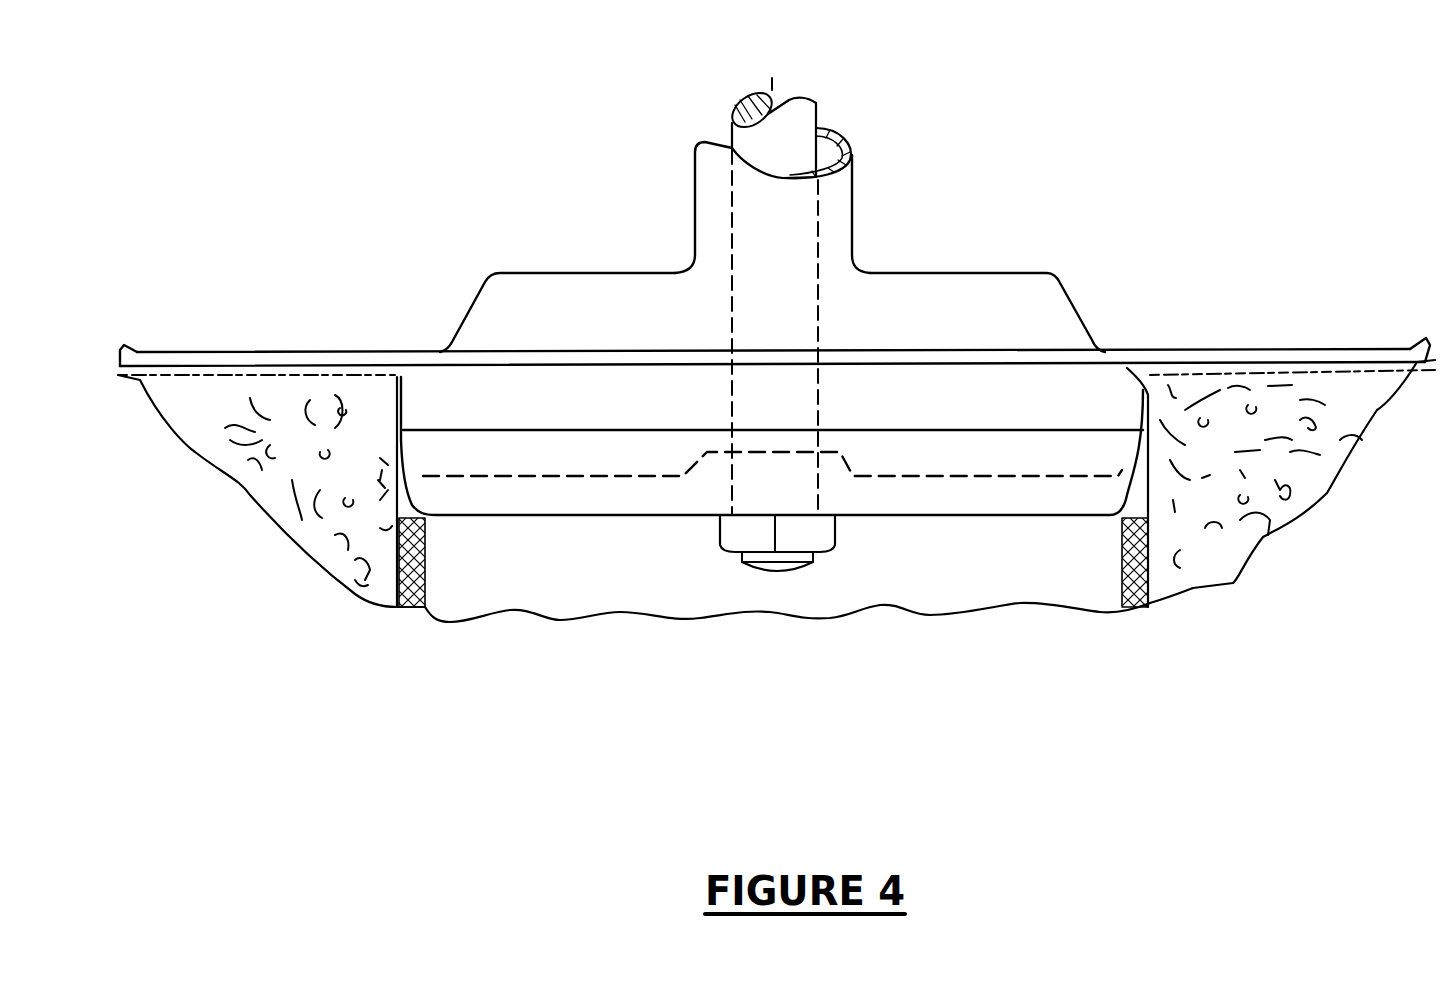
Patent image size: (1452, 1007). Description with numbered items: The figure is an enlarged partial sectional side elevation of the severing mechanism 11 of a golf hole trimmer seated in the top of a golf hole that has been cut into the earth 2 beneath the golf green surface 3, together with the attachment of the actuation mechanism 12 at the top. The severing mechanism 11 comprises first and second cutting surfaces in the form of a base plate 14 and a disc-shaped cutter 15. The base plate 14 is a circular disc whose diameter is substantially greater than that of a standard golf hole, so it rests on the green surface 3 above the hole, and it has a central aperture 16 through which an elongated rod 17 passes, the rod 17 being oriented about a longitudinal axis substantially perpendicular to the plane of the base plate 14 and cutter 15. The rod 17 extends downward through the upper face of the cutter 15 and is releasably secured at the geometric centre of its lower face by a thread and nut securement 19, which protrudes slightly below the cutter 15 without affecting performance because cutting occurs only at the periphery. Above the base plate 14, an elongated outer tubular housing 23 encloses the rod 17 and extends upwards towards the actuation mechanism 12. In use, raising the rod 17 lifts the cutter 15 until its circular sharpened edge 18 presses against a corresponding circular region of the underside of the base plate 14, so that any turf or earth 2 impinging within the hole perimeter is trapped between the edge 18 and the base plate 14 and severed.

The earth 2 is at (280, 508).
The golf green surface 3 is at (218, 382).
The severing mechanism 11 is at (1098, 235).
The actuation mechanism 12 is at (826, 93).
The base plate 14 is at (1055, 358).
The disc-shaped cutter 15 is at (945, 515).
The central aperture 16 is at (770, 362).
The elongated rod 17 is at (730, 133).
The circular sharpened edge 18 is at (407, 437).
The thread and nut securement 19 is at (807, 535).
The elongated outer tubular housing 23 is at (695, 218).